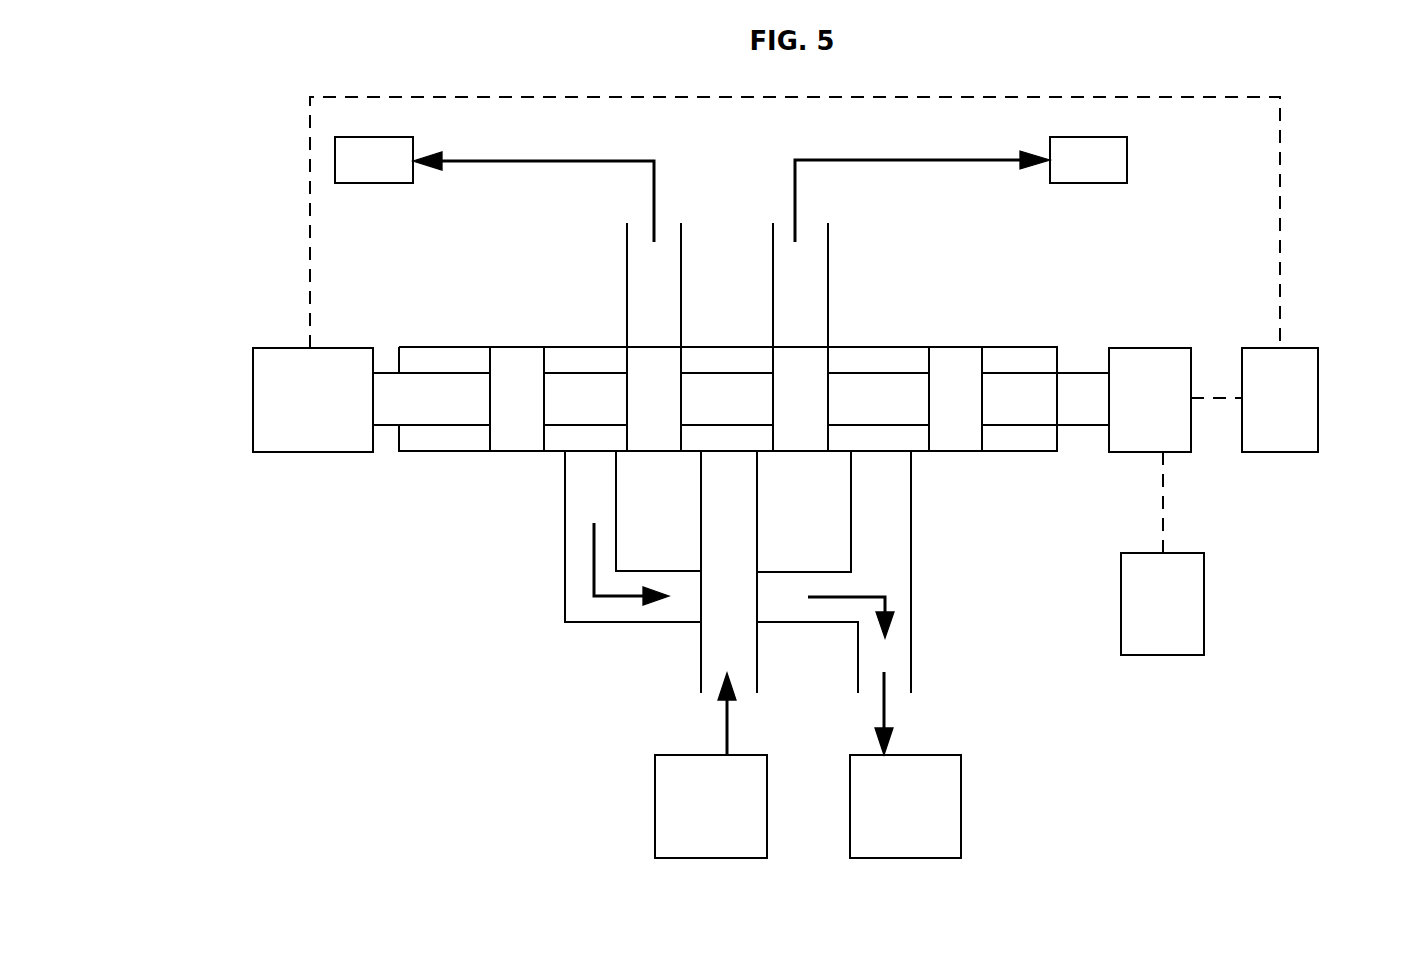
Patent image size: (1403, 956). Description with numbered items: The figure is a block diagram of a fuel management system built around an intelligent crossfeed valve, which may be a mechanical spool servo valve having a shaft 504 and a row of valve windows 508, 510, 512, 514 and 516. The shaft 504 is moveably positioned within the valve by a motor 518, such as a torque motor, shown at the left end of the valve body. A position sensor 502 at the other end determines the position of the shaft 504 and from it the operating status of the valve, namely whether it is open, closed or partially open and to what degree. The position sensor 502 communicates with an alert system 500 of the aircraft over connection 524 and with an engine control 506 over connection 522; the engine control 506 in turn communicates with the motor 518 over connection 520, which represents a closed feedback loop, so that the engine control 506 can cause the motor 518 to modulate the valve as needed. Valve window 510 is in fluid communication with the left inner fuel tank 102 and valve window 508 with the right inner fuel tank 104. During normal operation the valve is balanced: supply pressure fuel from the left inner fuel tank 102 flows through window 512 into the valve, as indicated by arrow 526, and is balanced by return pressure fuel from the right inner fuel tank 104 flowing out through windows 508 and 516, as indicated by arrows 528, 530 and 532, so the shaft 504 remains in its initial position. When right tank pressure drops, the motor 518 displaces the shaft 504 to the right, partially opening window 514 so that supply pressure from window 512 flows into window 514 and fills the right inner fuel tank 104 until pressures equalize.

The left inner fuel tank 102 is at (551, 497).
The right inner fuel tank 104 is at (961, 497).
The alert system 500 is at (1204, 620).
The position sensor 502 is at (1172, 452).
The shaft 504 is at (741, 399).
The engine control 506 is at (1320, 400).
The valve window 508 is at (588, 490).
The valve window 510 is at (642, 326).
The valve window 512 is at (717, 507).
The valve window 514 is at (810, 322).
The valve window 516 is at (873, 507).
The motor 518 is at (253, 400).
The connection 520 is at (742, 95).
The connection 522 is at (1210, 398).
The connection 524 is at (1160, 530).
The arrow 526 is at (730, 730).
The arrow 528 is at (593, 572).
The arrow 530 is at (890, 605).
The arrow 532 is at (880, 722).